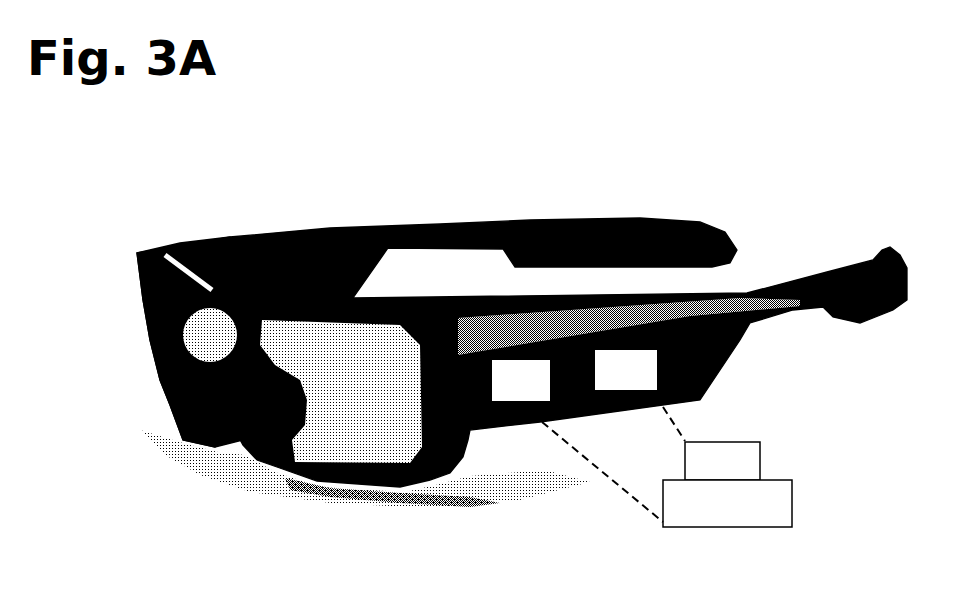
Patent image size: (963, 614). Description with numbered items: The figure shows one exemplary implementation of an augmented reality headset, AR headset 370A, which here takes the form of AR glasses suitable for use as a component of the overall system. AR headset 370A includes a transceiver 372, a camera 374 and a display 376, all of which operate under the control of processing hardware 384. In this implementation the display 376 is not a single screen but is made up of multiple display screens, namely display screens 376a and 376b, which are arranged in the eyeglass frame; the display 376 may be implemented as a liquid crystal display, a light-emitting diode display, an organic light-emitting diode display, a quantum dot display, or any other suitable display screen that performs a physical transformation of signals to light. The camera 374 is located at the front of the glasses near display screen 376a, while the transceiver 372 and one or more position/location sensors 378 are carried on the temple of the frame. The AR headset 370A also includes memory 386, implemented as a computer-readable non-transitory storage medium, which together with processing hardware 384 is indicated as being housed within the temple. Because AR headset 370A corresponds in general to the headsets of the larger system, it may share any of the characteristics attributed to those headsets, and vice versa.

The AR headset 370A is at (768, 134).
The transceiver 372 is at (542, 397).
The camera 374 is at (229, 348).
The display 376 is at (400, 507).
The display screen 376a is at (150, 325).
The display screen 376b is at (381, 416).
The position/location sensor 378 is at (647, 382).
The processing hardware 384 is at (744, 474).
The memory 386 is at (749, 516).